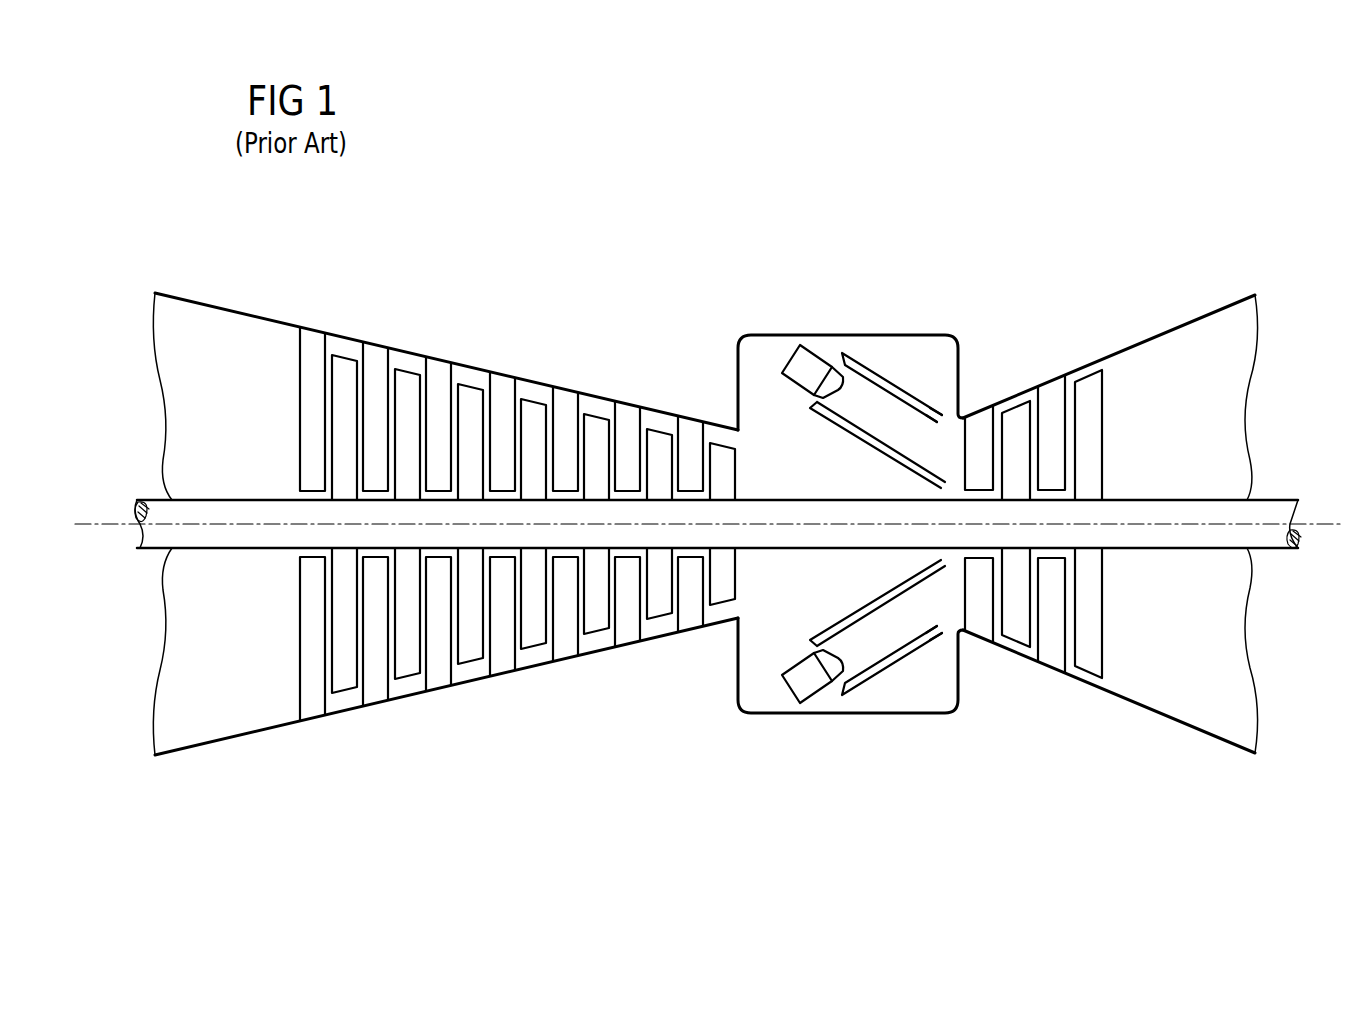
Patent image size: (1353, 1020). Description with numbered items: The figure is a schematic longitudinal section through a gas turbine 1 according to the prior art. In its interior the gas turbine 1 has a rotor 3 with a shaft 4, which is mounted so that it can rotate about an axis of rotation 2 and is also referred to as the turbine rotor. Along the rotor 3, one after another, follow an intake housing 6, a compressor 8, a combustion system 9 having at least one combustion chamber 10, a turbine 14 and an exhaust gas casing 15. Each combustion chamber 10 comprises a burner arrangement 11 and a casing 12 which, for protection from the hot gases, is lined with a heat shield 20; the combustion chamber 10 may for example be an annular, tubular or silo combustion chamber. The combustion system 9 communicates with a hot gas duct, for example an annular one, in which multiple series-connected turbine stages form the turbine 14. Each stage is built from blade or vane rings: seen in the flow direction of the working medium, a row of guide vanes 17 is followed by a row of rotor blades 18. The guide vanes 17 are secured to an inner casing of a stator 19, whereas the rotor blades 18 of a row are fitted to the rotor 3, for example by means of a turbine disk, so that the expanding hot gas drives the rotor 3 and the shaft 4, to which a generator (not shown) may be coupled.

The gas turbine 1 is at (1273, 187).
The axis of rotation 2 is at (110, 523).
The rotor 3 is at (1108, 558).
The shaft 4 is at (1278, 498).
The intake housing 6 is at (276, 320).
The compressor 8 is at (515, 254).
The combustion system 9 is at (897, 254).
The combustion chamber 10 is at (850, 323).
The burner arrangement 11 is at (816, 340).
The casing 12 is at (893, 384).
The turbine 14 is at (1107, 256).
The exhaust gas casing 15 is at (1160, 330).
The guide vane 17 is at (980, 425).
The rotor blade 18 is at (1020, 412).
The stator 19 is at (1065, 352).
The heat shield 20 is at (915, 402).